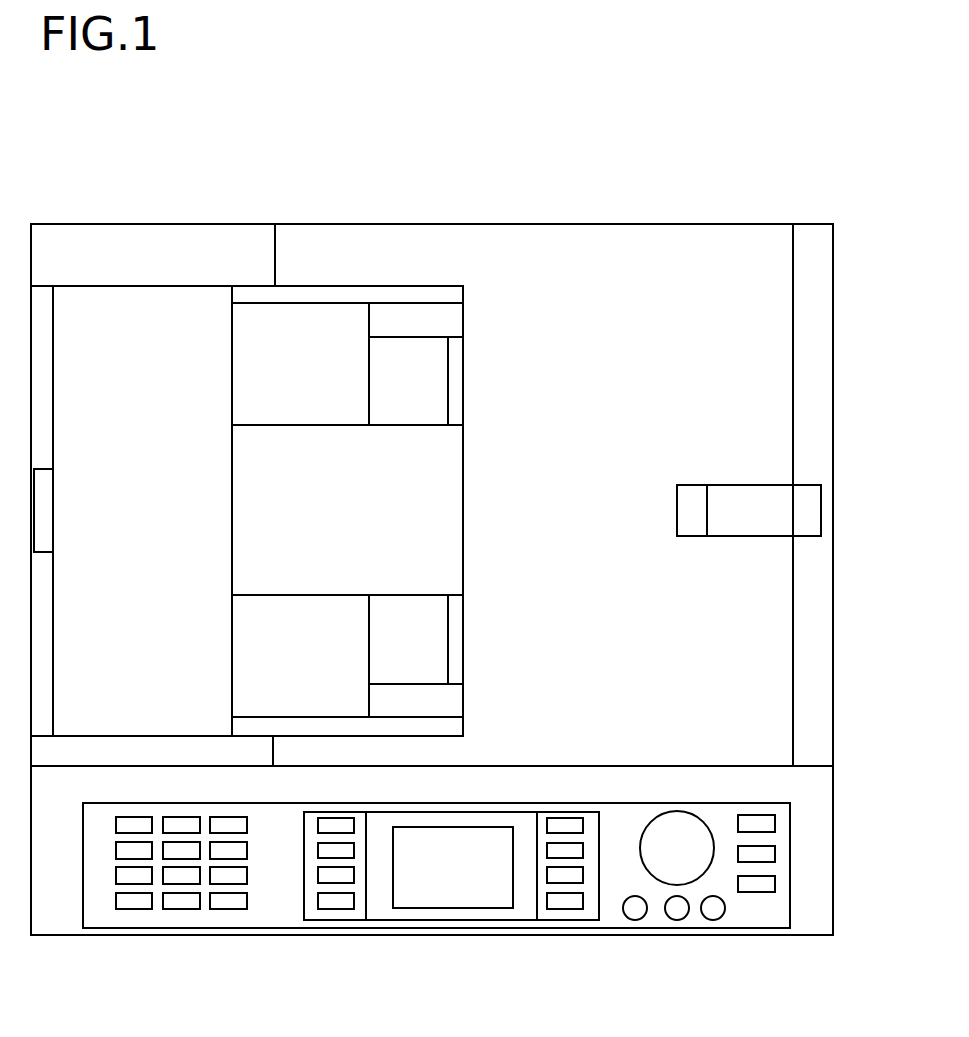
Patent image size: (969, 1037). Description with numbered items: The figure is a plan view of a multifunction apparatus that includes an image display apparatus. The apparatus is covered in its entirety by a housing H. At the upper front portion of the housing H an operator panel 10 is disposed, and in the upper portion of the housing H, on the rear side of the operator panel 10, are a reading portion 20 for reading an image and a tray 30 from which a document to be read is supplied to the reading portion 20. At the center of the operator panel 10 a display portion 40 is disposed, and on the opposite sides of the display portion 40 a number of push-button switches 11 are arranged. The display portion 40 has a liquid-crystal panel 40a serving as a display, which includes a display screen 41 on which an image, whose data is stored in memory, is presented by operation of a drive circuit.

The housing H is at (843, 690).
The operator panel 10 is at (72, 907).
The push-button switches 11 is at (162, 912).
The reading portion 20 is at (180, 253).
The tray 30 is at (346, 405).
The display portion 40 is at (462, 807).
The liquid-crystal panel 40a is at (491, 815).
The display screen 41 is at (478, 893).